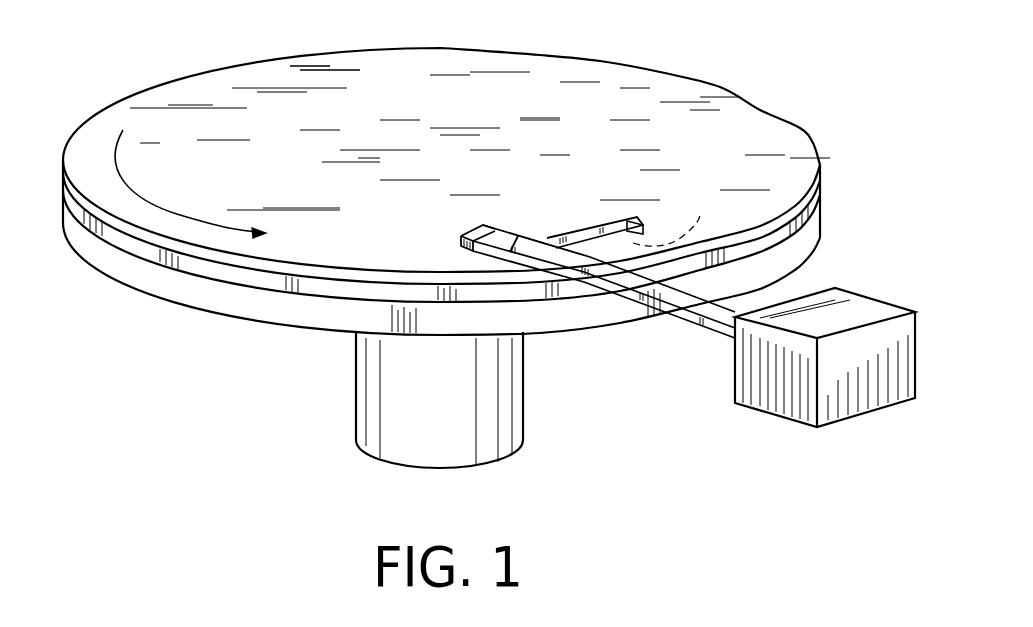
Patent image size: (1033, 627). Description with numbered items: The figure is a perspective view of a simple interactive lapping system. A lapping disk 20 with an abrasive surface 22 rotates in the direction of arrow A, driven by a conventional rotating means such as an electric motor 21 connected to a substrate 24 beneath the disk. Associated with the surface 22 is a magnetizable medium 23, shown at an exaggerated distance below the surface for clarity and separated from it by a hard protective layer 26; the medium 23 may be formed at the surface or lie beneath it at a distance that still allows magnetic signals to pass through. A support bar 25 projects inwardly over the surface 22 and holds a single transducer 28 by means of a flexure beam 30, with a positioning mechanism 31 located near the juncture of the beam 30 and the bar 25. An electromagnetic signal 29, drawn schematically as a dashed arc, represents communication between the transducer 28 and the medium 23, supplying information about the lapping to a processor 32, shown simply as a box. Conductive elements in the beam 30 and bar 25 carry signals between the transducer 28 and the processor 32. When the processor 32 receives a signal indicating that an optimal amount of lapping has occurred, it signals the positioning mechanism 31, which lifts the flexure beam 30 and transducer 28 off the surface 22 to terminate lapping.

The lapping disk 20 is at (705, 80).
The electric motor 21 is at (356, 400).
The abrasive surface 22 is at (318, 78).
The magnetizable medium 23 is at (222, 281).
The substrate 24 is at (262, 312).
The support bar 25 is at (642, 303).
The hard protective layer 26 is at (178, 253).
The transducer 28 is at (645, 224).
The electromagnetic signal 29 is at (700, 212).
The flexure beam 30 is at (594, 229).
The positioning mechanism 31 is at (530, 237).
The processor 32 is at (868, 302).
The direction of rotation A is at (183, 212).